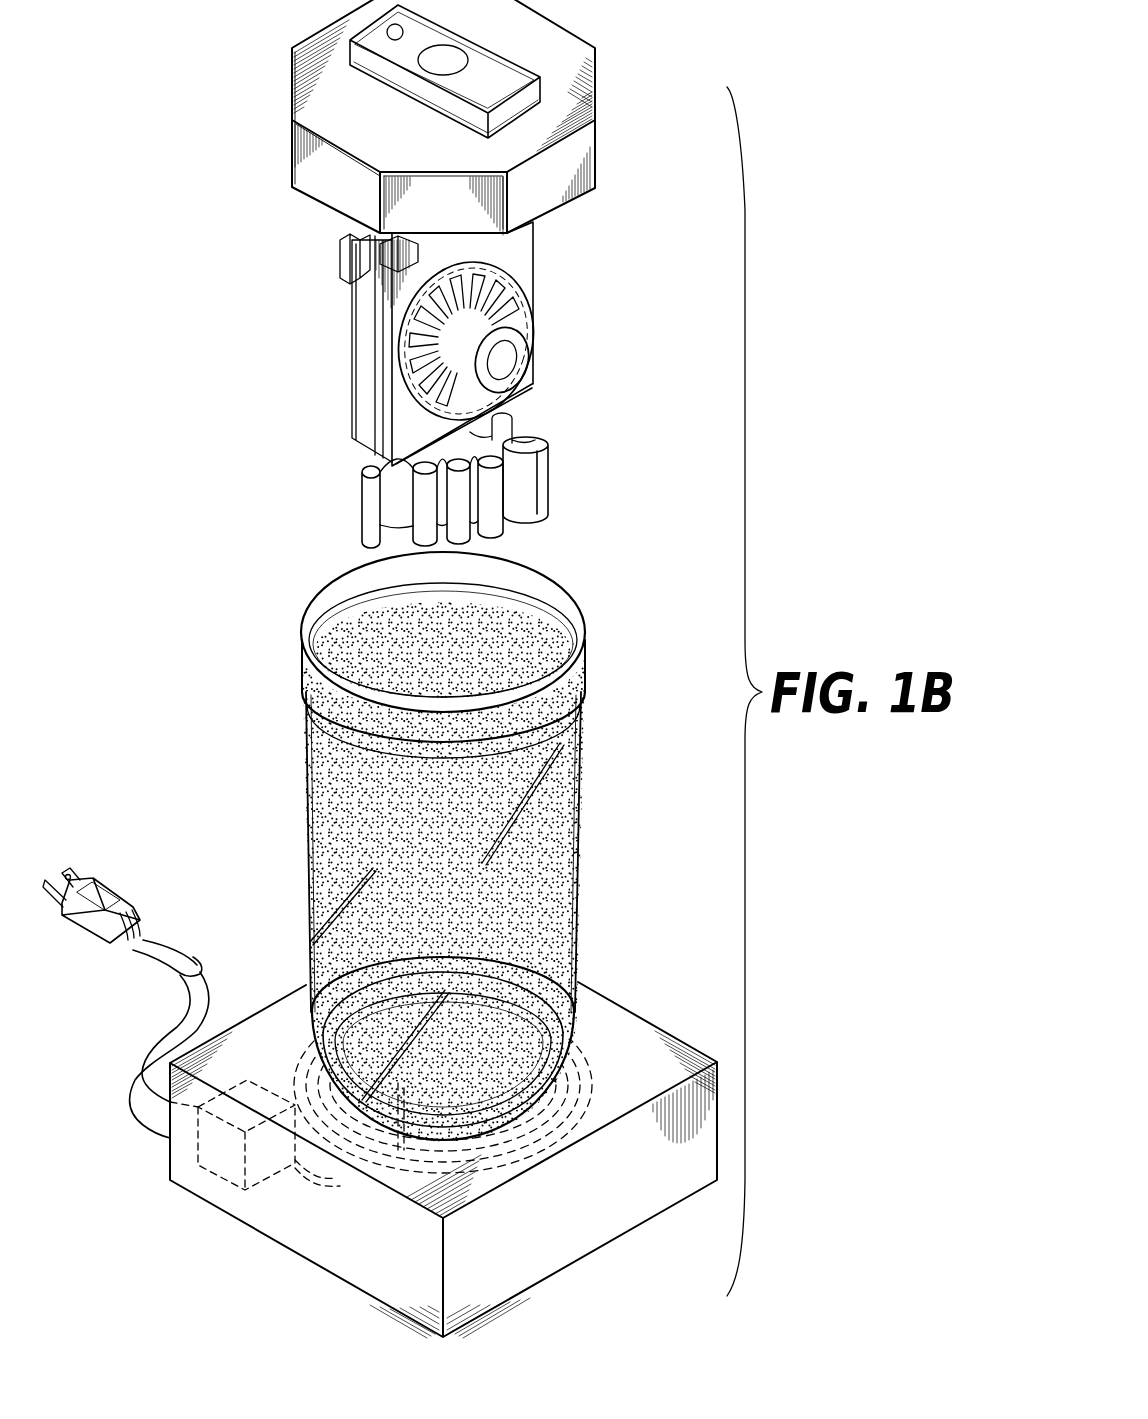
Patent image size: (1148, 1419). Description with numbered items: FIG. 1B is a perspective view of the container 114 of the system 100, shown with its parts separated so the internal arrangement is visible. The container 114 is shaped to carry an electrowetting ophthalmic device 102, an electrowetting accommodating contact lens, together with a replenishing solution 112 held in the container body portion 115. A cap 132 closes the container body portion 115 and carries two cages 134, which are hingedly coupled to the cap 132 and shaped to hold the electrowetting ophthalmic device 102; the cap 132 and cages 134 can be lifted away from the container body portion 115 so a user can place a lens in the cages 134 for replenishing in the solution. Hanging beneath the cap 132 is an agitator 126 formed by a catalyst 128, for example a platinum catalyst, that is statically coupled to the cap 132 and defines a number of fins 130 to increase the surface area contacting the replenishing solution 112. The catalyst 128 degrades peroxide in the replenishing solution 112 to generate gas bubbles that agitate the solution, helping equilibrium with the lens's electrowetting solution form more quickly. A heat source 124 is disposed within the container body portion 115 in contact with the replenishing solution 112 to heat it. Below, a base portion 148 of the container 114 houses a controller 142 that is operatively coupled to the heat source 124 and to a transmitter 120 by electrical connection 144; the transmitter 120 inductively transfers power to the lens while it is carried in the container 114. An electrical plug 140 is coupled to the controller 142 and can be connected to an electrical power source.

The system 100 is at (204, 538).
The electrowetting ophthalmic device 102 is at (513, 264).
The replenishing solution 112 is at (472, 850).
The container 114 is at (477, 850).
The container body portion 115 is at (575, 893).
The transmitter 120 is at (592, 1043).
The heat source 124 is at (547, 983).
The agitator 126 is at (545, 423).
The catalyst 128 is at (509, 524).
The fins 130 is at (548, 470).
The cap 132 is at (597, 70).
The cages 134 is at (512, 283).
The electrical plug 140 is at (143, 946).
The controller 142 is at (197, 1145).
The electrical connection 144 is at (400, 1186).
The base portion 148 is at (568, 1273).